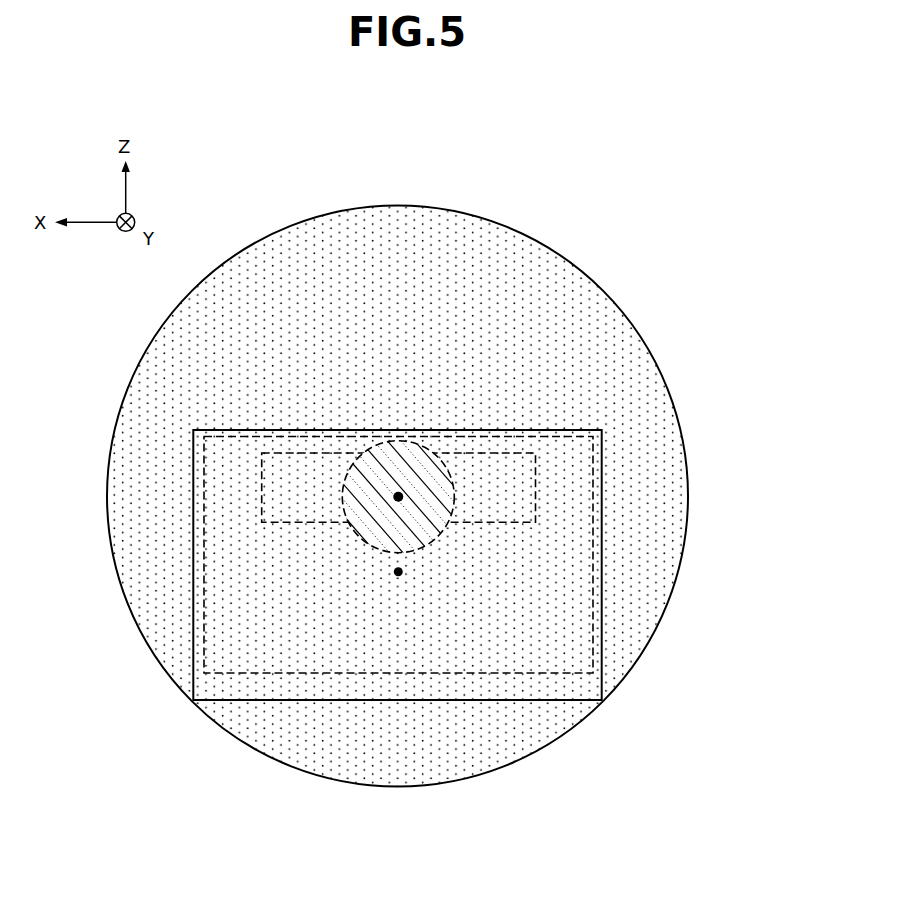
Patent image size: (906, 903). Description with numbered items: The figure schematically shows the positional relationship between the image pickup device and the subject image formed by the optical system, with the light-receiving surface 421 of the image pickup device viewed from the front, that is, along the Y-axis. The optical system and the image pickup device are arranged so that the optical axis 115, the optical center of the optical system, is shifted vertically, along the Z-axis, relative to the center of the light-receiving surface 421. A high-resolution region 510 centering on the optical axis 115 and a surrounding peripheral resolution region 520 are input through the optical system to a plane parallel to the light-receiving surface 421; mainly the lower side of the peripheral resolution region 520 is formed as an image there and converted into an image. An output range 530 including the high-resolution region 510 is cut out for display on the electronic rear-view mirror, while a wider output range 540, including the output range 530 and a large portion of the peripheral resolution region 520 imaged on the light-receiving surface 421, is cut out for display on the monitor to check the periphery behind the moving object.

The optical axis 115 is at (398, 497).
The light-receiving surface 421 is at (602, 672).
The high-resolution region 510 is at (398, 475).
The peripheral resolution region 520 is at (615, 300).
The output range 530 is at (536, 510).
The output range 540 is at (593, 577).